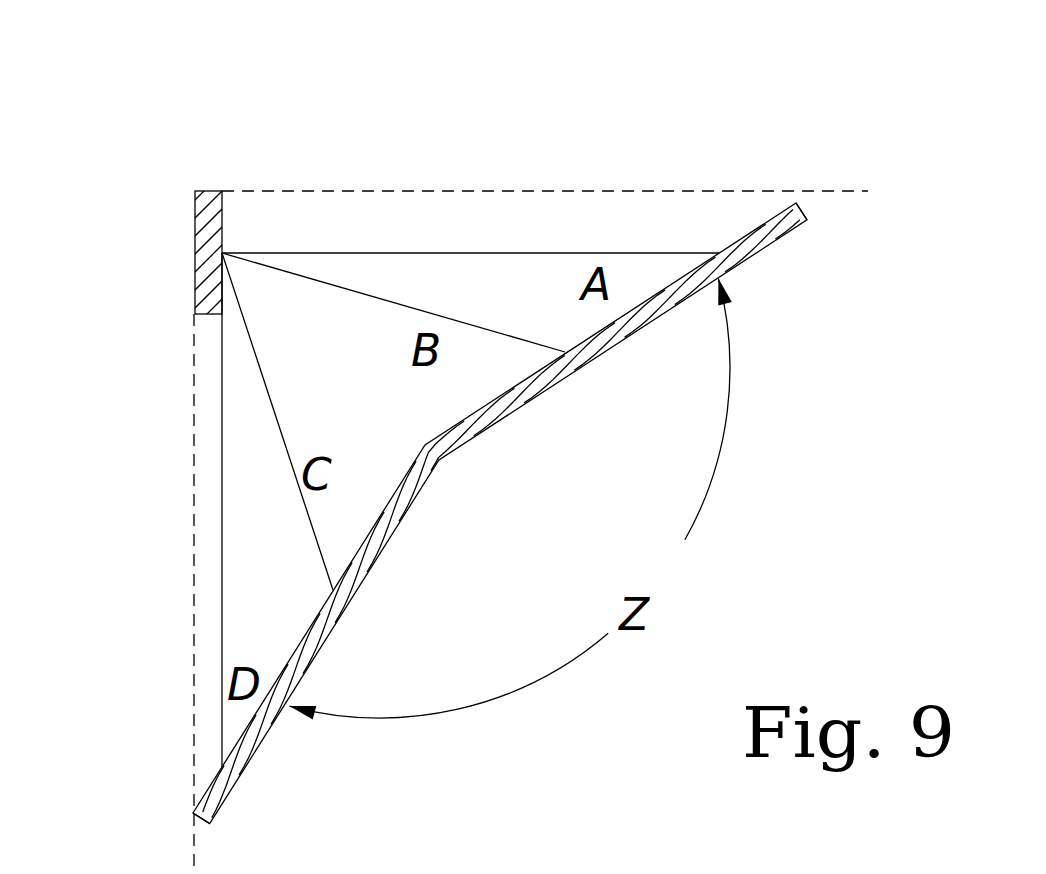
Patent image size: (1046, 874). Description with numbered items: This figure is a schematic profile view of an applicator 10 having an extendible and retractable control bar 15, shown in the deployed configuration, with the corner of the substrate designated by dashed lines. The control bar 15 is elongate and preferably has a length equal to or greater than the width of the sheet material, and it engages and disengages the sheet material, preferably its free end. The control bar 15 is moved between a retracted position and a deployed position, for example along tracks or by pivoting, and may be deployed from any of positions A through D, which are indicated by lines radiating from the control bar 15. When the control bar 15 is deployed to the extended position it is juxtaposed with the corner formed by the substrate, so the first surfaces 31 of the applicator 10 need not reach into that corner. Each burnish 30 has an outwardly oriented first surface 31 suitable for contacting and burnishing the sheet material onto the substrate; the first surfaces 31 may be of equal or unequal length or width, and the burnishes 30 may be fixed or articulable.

The applicator 10 is at (576, 145).
The control bar 15 is at (195, 253).
The burnish 30 is at (782, 229).
The first surface 31 is at (752, 228).